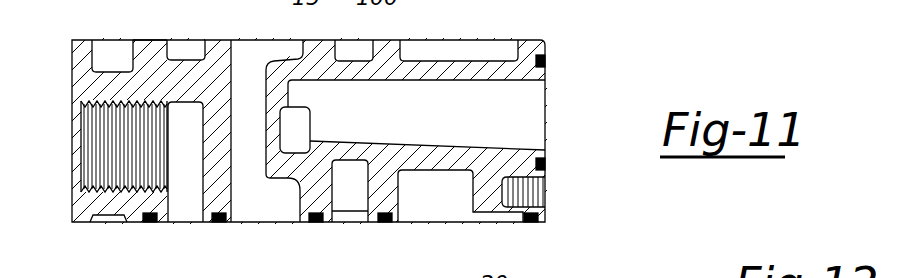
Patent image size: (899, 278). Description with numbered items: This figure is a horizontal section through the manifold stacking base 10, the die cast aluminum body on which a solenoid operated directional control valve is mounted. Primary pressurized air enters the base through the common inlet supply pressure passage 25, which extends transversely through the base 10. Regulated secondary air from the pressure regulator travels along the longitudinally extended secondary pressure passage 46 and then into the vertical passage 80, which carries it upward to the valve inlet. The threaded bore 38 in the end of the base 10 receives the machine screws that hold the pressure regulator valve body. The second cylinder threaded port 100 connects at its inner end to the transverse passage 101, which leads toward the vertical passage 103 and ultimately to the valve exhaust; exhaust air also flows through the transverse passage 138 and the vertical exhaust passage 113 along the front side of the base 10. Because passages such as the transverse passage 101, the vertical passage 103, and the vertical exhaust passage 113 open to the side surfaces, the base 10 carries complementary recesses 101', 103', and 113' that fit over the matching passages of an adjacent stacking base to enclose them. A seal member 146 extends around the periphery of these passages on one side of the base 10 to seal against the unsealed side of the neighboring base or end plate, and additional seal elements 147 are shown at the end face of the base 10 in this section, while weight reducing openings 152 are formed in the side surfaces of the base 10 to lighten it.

The manifold stacking base 10 is at (68, 212).
The common inlet supply pressure passage 25 is at (240, 189).
The threaded bore 38 is at (523, 198).
The longitudinally extended secondary pressure passage 46 is at (530, 146).
The vertical passage 80 is at (303, 124).
The second cylinder threaded port 100 is at (98, 104).
The transverse passage 101 is at (191, 177).
The complementary recess 101' is at (169, 31).
The vertical passage 103 is at (348, 210).
The complementary recess 103' is at (339, 36).
The vertical exhaust passage 113 is at (470, 131).
The complementary recess 113' is at (500, 39).
The transverse passage 138 is at (180, 20).
The seal member 146 is at (152, 222).
The side O-ring seal 147 is at (548, 58).
The weight reducing opening 152 is at (97, 43).